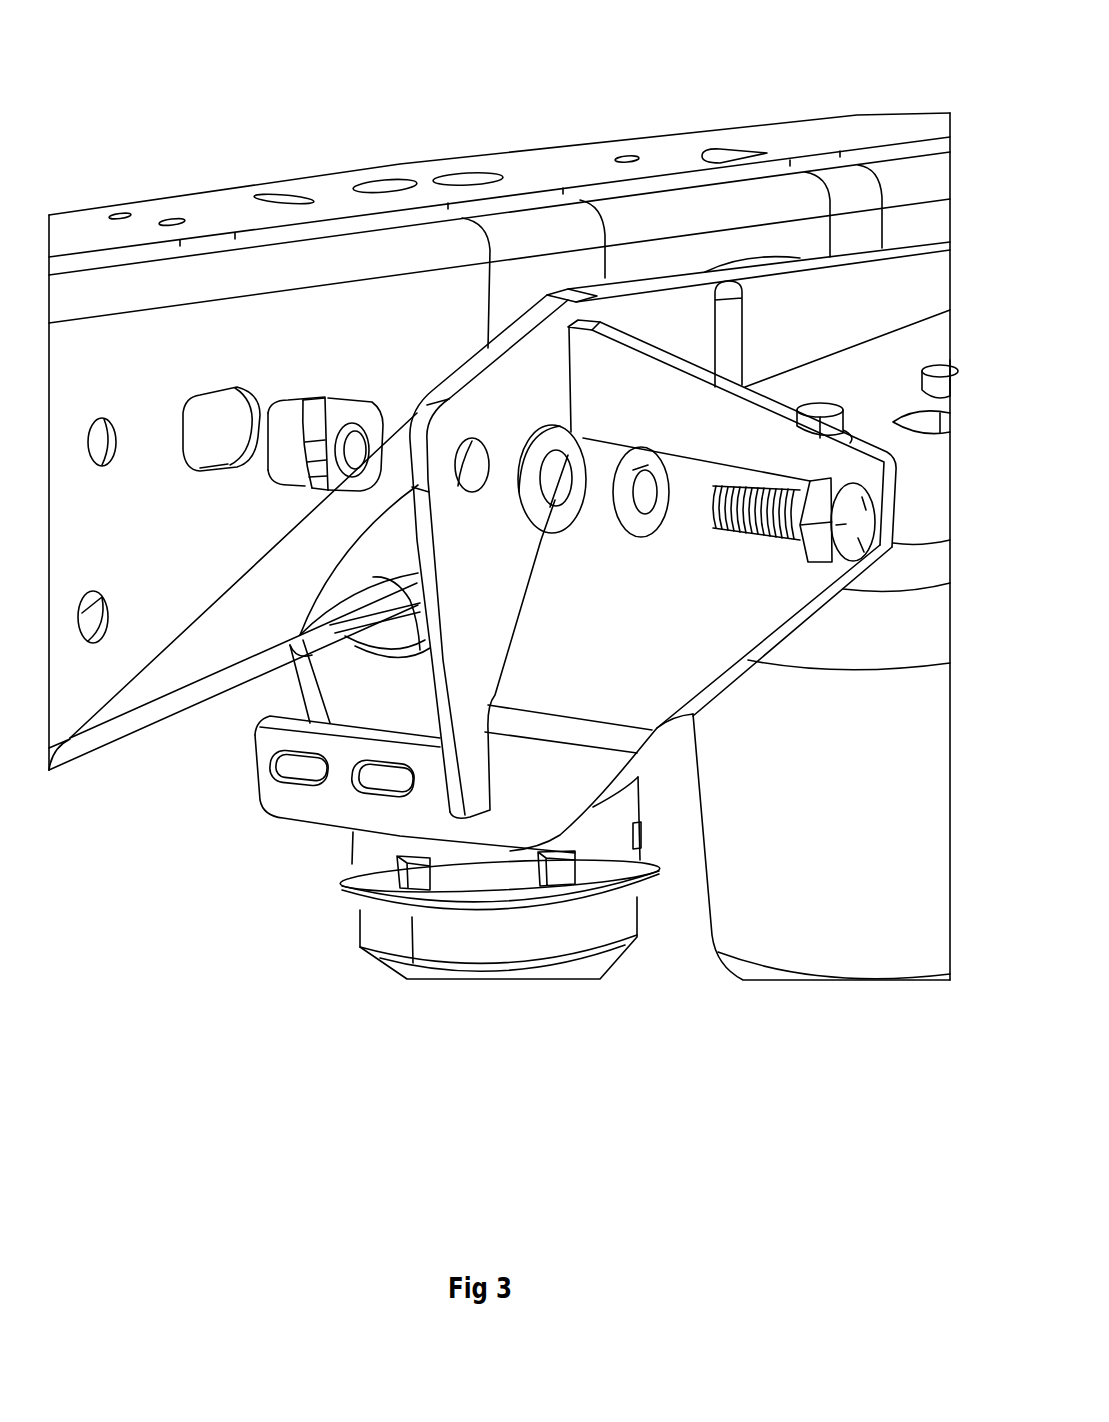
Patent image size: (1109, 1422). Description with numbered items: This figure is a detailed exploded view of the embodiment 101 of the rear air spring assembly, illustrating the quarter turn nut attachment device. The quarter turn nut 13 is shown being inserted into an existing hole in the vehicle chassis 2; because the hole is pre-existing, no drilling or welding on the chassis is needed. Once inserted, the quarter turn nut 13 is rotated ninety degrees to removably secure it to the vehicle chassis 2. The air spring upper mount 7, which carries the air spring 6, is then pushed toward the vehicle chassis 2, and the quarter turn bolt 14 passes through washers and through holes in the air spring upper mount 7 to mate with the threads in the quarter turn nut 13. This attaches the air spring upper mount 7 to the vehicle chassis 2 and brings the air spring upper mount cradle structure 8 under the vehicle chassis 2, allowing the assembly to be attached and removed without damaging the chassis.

The embodiment 101 is at (402, 118).
The vehicle chassis 2 is at (140, 360).
The quarter turn nut 13 is at (326, 402).
The air spring upper mount 7 is at (570, 660).
The quarter turn bolt 14 is at (817, 543).
The air spring 6 is at (818, 818).
The air spring upper mount cradle structure 8 is at (348, 812).